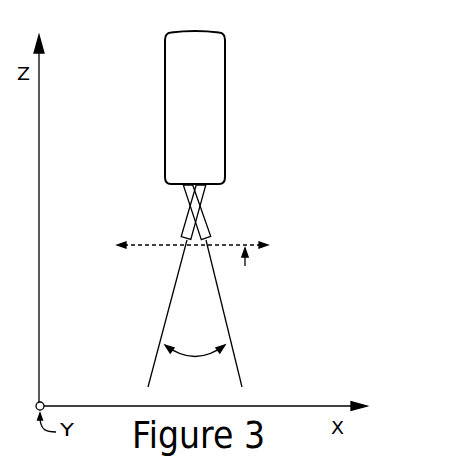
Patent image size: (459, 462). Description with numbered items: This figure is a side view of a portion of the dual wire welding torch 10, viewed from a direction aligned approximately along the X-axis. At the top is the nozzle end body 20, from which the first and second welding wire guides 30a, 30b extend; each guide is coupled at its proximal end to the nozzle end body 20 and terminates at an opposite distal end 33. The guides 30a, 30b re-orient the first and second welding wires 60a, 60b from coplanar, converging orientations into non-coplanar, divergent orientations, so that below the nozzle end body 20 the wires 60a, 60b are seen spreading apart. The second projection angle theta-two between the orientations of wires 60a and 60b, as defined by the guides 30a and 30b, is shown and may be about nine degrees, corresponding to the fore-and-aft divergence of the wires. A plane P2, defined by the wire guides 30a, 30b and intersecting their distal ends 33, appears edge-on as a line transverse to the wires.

The welding torch 10 is at (326, 158).
The nozzle end body 20 is at (210, 57).
The first welding wire guide 30a is at (204, 188).
The second welding wire guide 30b is at (183, 189).
The distal end 33 is at (221, 237).
The first welding wire 60a is at (166, 318).
The second welding wire 60b is at (226, 317).
The plane P2 is at (246, 267).